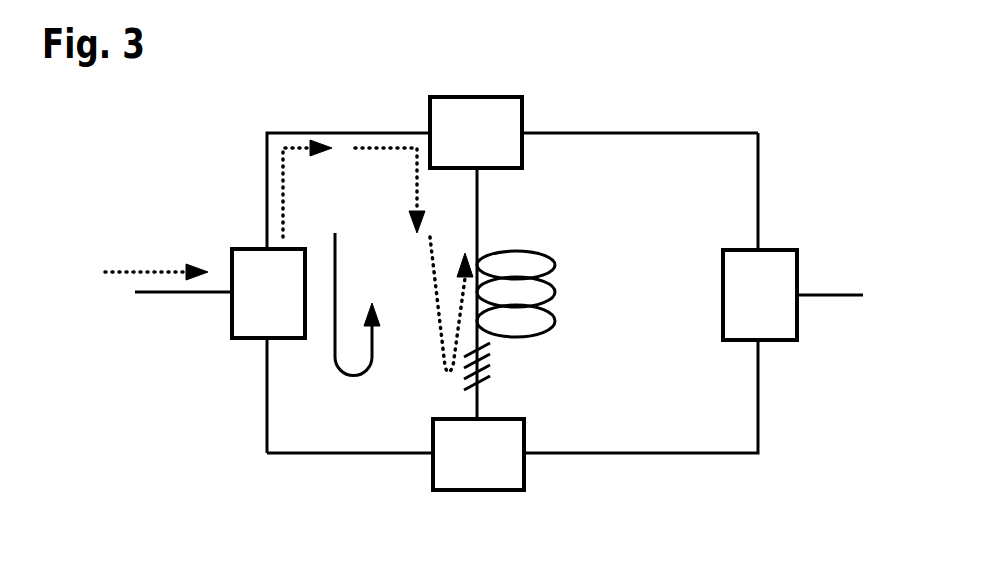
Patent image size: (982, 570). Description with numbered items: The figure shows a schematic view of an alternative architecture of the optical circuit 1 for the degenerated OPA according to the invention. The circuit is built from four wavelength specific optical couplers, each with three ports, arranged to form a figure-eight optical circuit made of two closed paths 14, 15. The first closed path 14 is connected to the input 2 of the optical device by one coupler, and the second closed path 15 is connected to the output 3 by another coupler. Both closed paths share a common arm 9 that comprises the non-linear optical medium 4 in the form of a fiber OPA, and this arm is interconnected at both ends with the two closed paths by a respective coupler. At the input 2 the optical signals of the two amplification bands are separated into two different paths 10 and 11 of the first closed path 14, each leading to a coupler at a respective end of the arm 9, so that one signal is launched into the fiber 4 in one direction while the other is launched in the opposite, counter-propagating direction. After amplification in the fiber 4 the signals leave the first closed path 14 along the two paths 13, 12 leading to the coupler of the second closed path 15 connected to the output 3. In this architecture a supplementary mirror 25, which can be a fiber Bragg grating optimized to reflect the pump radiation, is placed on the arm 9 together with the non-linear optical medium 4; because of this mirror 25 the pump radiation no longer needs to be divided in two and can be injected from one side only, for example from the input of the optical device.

The optical circuit 1 is at (798, 142).
The input 2 is at (207, 293).
The output 3 is at (805, 297).
The non-linear optical medium 4 is at (550, 257).
The common arm 9 is at (479, 205).
The first path of the first closed path 10 is at (286, 133).
The second path of the first closed path 11 is at (286, 455).
The path of the second closed path 12 is at (745, 456).
The path of the second closed path 13 is at (748, 133).
The first closed path 14 is at (288, 423).
The second closed path 15 is at (625, 165).
The mirror 25 is at (492, 378).